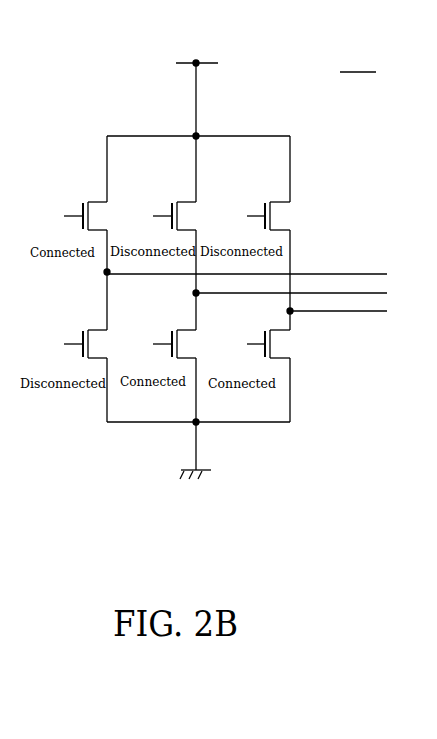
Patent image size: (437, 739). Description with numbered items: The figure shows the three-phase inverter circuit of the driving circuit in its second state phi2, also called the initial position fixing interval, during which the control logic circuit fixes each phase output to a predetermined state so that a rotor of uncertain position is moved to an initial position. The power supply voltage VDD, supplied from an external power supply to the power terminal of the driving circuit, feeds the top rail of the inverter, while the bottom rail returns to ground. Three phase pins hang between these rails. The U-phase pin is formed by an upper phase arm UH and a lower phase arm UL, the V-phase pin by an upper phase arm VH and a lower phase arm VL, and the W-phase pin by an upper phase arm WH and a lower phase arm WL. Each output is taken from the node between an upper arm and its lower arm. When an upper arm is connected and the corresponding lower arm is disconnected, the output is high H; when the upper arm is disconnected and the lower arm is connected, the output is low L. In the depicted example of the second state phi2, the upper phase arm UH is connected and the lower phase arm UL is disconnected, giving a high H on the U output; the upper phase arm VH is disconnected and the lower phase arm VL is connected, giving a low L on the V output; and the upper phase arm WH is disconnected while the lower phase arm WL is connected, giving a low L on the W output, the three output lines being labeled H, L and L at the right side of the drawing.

The power supply voltage VDD is at (197, 89).
The high output state H is at (255, 275).
The low output state L is at (299, 303).
The upper phase arm of the U-phase pin UH is at (103, 204).
The upper phase arm of the V-phase pin VH is at (191, 204).
The upper phase arm of the W-phase pin WH is at (289, 204).
The lower phase arm of the U-phase pin UL is at (100, 344).
The lower phase arm of the V-phase pin VL is at (191, 344).
The lower phase arm of the W-phase pin WL is at (287, 344).
The second state phi2 is at (358, 61).